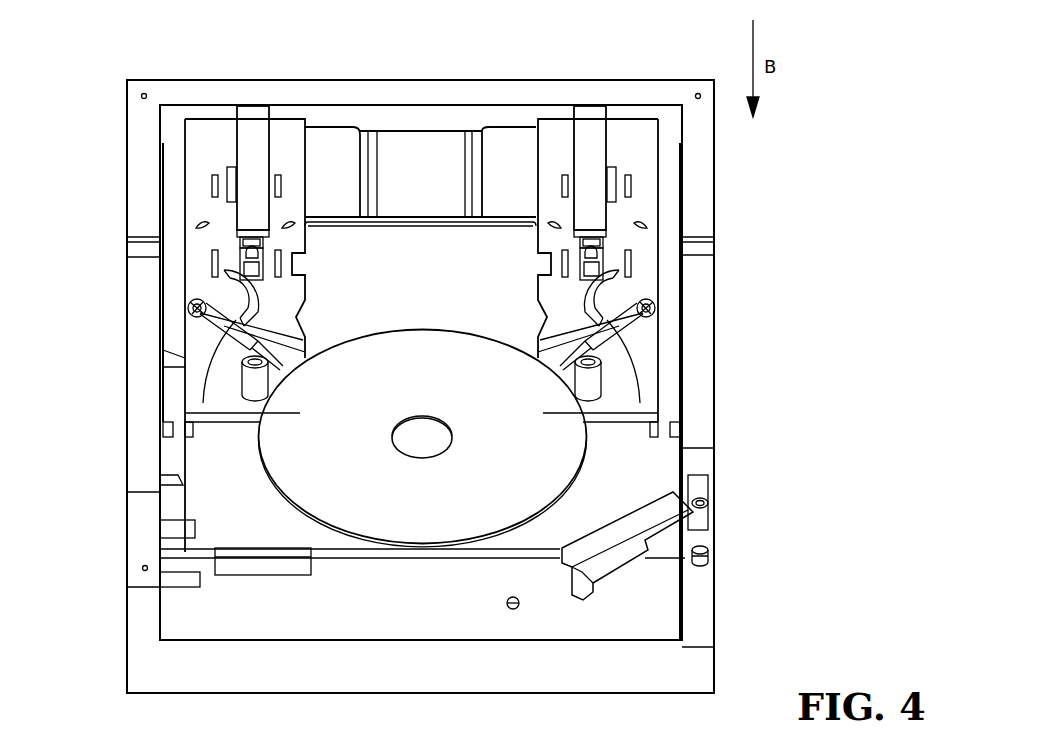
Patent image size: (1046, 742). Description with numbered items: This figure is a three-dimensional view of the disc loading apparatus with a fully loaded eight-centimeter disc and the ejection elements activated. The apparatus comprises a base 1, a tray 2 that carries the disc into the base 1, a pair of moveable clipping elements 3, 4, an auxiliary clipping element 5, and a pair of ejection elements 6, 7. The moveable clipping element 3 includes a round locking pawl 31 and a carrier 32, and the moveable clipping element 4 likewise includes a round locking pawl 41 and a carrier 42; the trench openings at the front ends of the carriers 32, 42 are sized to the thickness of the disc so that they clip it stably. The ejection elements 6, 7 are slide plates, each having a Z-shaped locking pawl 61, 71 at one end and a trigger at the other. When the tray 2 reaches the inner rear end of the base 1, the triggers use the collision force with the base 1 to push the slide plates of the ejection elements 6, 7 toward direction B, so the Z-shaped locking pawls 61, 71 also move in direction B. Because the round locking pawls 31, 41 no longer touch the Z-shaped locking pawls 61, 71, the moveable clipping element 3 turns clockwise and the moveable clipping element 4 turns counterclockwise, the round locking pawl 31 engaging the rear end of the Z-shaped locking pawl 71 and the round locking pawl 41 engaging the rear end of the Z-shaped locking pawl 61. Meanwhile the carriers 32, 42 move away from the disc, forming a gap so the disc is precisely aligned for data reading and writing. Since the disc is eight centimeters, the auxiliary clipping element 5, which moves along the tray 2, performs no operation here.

The base 1 is at (140, 122).
The tray 2 is at (447, 140).
The moveable clipping element 3 is at (225, 292).
The moveable clipping element 4 is at (633, 292).
The auxiliary clipping element 5 is at (603, 550).
The ejection element 6 is at (592, 152).
The ejection element 7 is at (245, 158).
The round locking pawl 31 is at (250, 244).
The carrier 32 is at (250, 377).
The round locking pawl 41 is at (597, 243).
The carrier 42 is at (590, 380).
The Z-shaped locking pawl 61 is at (600, 260).
The Z-shaped locking pawl 71 is at (210, 258).